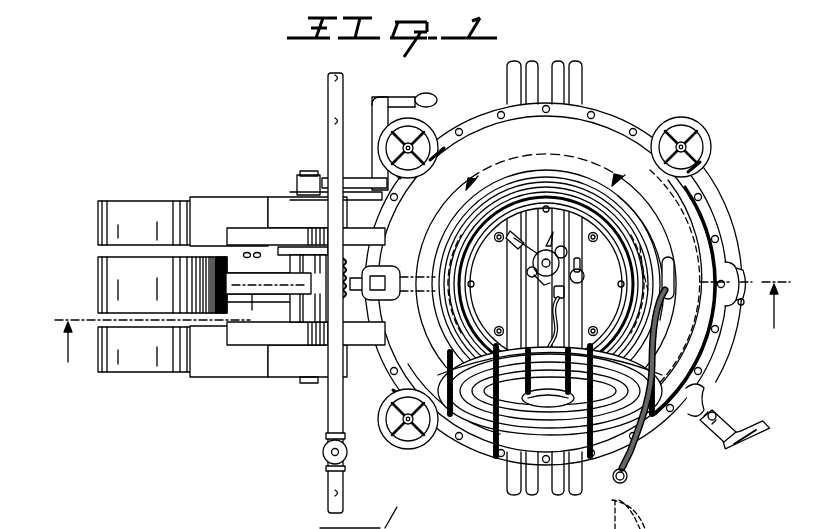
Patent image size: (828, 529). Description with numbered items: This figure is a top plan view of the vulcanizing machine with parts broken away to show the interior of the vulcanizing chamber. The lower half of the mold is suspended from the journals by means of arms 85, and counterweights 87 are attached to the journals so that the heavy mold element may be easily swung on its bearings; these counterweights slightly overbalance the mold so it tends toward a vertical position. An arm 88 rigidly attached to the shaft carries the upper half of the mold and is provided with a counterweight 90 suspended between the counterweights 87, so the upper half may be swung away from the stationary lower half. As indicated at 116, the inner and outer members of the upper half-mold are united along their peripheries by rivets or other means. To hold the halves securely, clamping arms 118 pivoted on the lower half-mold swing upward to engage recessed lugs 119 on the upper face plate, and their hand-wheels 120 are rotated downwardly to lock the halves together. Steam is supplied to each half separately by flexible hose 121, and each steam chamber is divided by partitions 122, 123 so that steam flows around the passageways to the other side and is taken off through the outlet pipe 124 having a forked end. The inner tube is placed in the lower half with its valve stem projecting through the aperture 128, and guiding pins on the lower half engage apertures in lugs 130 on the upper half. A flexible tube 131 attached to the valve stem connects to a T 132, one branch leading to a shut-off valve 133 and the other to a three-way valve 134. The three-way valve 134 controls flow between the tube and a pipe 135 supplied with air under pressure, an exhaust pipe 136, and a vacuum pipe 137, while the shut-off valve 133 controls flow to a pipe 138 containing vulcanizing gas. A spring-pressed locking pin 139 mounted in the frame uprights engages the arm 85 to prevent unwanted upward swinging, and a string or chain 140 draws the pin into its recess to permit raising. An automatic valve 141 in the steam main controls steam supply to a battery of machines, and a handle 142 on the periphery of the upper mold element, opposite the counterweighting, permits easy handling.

The arms 85 is at (312, 228).
The counterweights 87 is at (108, 207).
The arm 88 is at (306, 272).
The counterweight 90 is at (108, 290).
The periphery union of upper half-mold 116 is at (703, 232).
The clamping arms 118 is at (710, 436).
The recessed lugs 119 is at (700, 397).
The hand-wheels 120 is at (420, 447).
The flexible hose 121 is at (523, 514).
The partition 122 is at (643, 355).
The partition 123 is at (419, 262).
The outlet pipe 124 is at (380, 307).
The aperture 128 is at (510, 445).
The lugs 130 is at (518, 251).
The flexible tube 131 is at (556, 322).
The T 132 is at (568, 300).
The shut-off valve 133 is at (582, 276).
The three-way valve 134 is at (533, 268).
The pipe 135 is at (533, 60).
The exhaust pipe 136 is at (511, 58).
The vacuum pipe 137 is at (559, 59).
The pipe 138 is at (578, 60).
The spring-pressed locking pin 139 is at (353, 377).
The string or chain 140 is at (402, 397).
The automatic valve 141 is at (323, 457).
The handle 142 is at (746, 270).